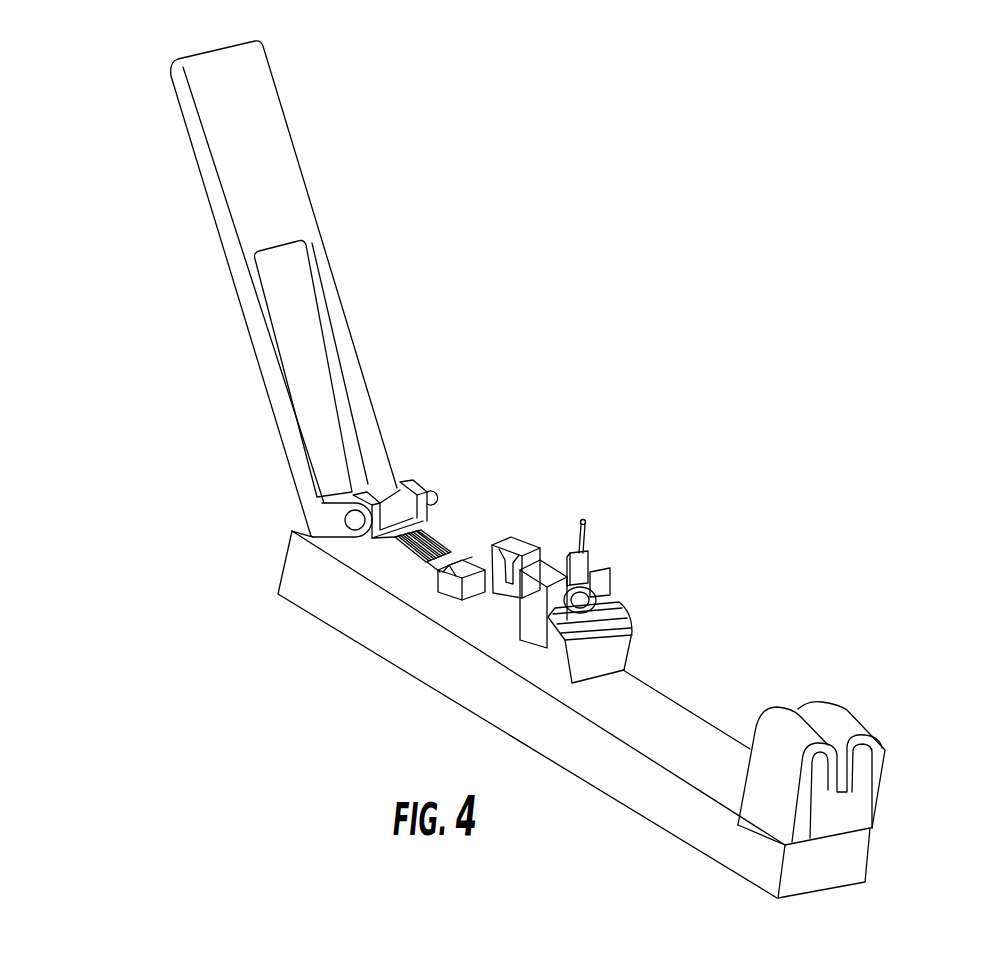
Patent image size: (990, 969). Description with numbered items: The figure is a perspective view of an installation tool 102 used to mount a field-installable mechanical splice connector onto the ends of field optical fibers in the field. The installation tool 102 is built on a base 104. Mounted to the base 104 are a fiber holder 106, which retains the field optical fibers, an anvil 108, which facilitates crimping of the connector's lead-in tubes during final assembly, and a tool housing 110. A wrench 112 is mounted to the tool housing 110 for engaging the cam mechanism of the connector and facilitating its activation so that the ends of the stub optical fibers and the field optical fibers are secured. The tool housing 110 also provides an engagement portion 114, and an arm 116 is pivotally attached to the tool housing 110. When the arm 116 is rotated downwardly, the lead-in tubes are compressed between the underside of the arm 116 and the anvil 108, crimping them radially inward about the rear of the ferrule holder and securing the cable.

The installation tool 102 is at (500, 342).
The base 104 is at (663, 715).
The fiber holder 106 is at (860, 798).
The anvil 108 is at (607, 650).
The tool housing 110 is at (392, 567).
The wrench 112 is at (583, 521).
The engagement portion 114 is at (505, 537).
The arm 116 is at (275, 157).